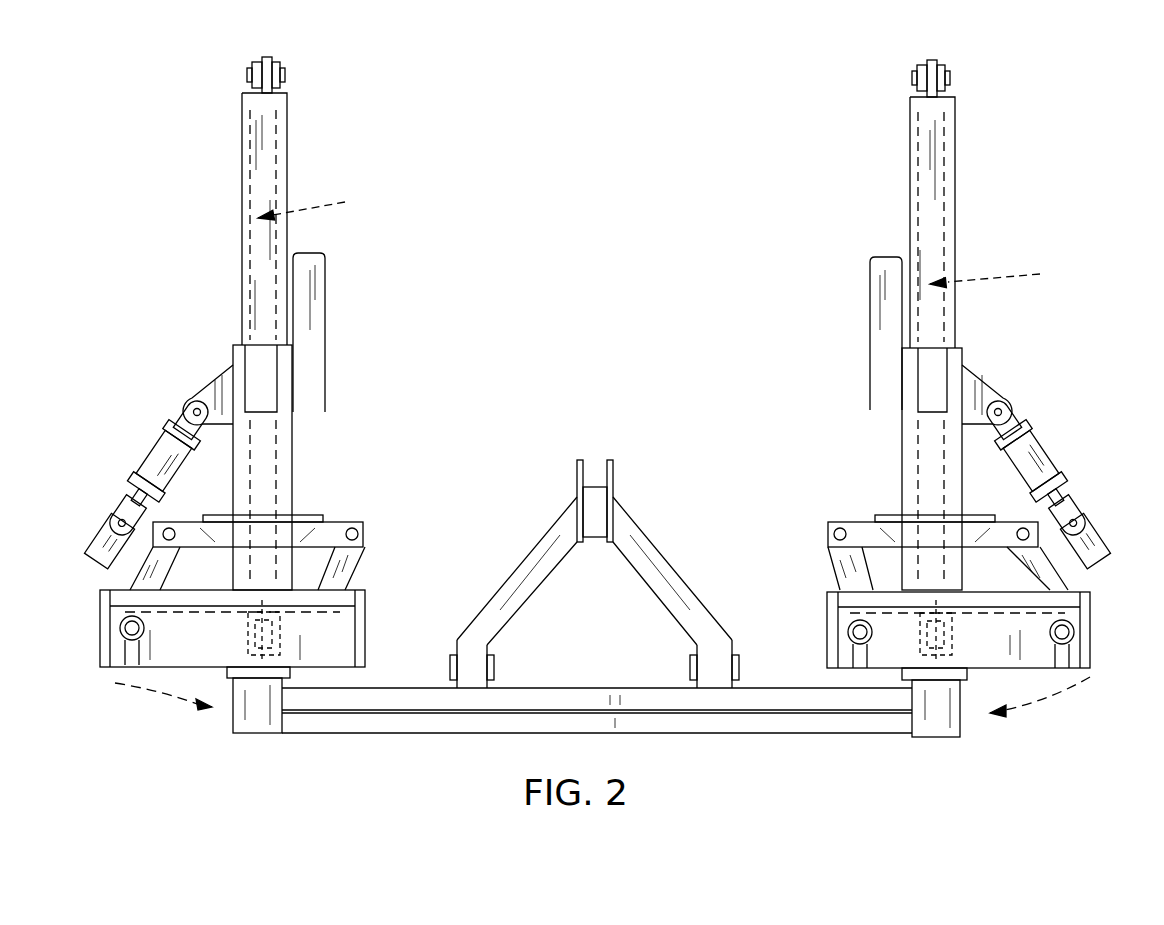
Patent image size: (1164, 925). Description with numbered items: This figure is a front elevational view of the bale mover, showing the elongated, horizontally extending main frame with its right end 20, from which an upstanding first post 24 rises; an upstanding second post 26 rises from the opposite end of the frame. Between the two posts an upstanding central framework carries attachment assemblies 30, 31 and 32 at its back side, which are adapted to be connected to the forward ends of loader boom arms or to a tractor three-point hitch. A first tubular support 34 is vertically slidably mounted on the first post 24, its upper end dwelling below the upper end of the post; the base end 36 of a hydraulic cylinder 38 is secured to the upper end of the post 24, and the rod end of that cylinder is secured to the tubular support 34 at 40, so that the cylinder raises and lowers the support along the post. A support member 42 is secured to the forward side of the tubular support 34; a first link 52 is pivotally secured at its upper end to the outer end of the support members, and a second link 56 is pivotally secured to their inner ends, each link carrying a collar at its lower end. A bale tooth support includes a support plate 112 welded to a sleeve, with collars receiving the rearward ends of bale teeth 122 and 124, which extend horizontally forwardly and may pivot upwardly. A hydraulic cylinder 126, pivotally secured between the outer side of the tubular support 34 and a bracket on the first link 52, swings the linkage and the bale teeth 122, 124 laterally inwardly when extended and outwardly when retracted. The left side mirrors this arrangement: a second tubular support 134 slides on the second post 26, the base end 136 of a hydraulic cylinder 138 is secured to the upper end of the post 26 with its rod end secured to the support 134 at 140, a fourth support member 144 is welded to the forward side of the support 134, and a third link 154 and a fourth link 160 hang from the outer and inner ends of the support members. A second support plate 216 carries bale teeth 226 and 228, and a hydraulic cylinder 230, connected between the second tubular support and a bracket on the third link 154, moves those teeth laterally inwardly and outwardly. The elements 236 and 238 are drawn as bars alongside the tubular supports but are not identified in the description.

The right end 20 is at (223, 732).
The first post 24 is at (287, 158).
The second post 26 is at (955, 208).
The attachment assembly 30 is at (494, 668).
The attachment assembly 31 is at (742, 668).
The attachment assembly 32 is at (613, 470).
The first tubular support 34 is at (292, 468).
The base end 36 is at (285, 68).
The hydraulic cylinder 38 is at (319, 204).
The rod end attachment point 40 is at (315, 700).
The support member 42 is at (335, 528).
The first link 52 is at (120, 573).
The second link 56 is at (345, 573).
The support plate 112 is at (203, 650).
The bale tooth 122 is at (360, 612).
The bale tooth 124 is at (132, 628).
The hydraulic cylinder 126 is at (143, 467).
The second tubular support 134 is at (962, 352).
The base end 136 is at (950, 70).
The hydraulic cylinder 138 is at (1009, 275).
The rod end attachment point 140 is at (970, 668).
The fourth support member 144 is at (865, 522).
The third link 154 is at (1040, 578).
The fourth link 160 is at (840, 570).
The support plate 216 is at (995, 650).
The bale tooth 226 is at (1062, 632).
The bale tooth 228 is at (860, 632).
The hydraulic cylinder 230 is at (1033, 455).
The first guide bar 236 is at (318, 338).
The second guide bar 238 is at (877, 345).